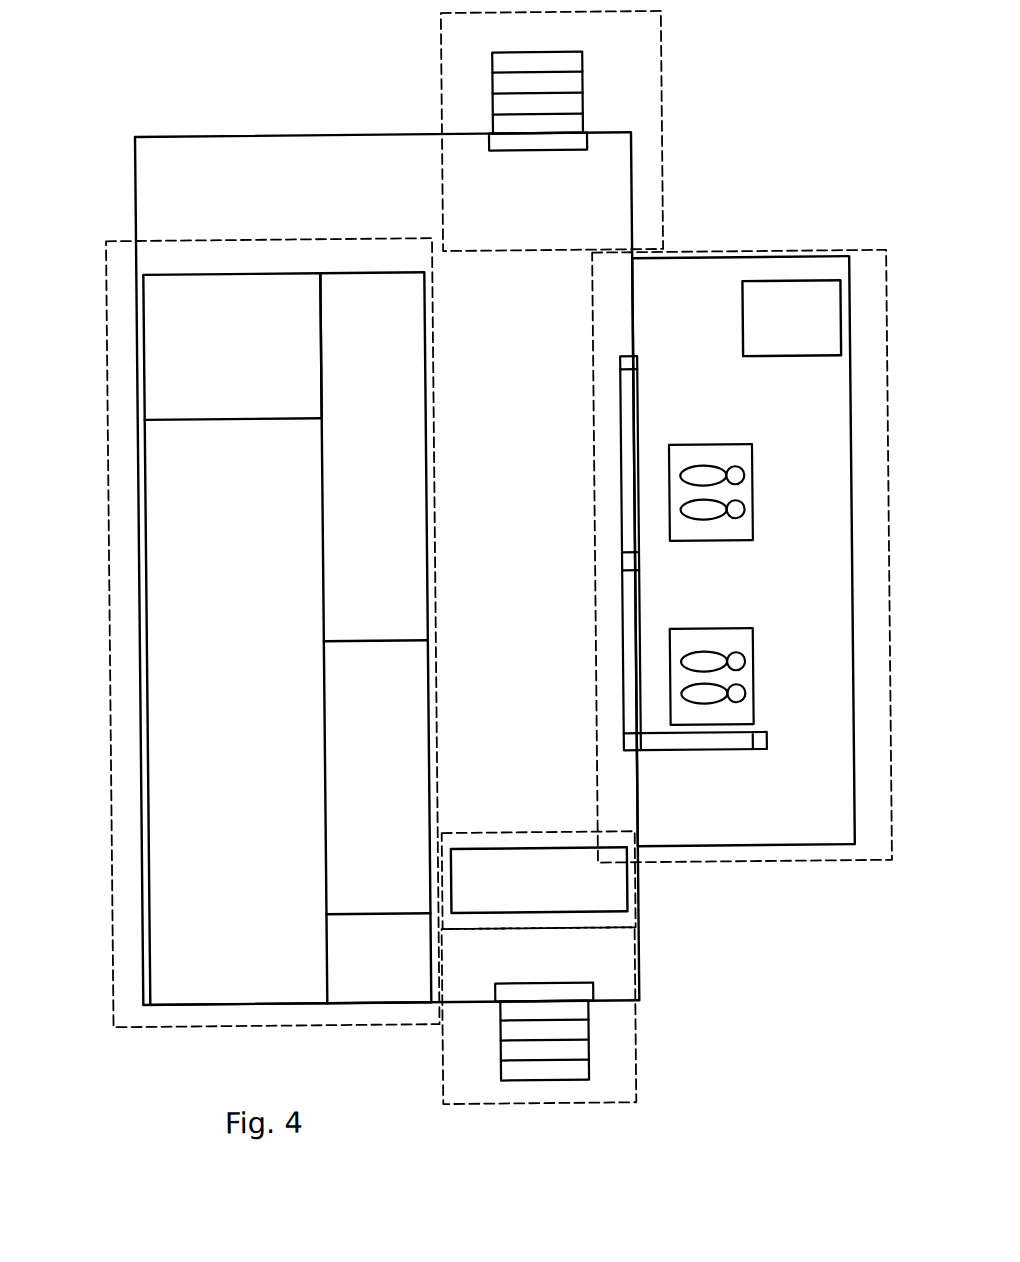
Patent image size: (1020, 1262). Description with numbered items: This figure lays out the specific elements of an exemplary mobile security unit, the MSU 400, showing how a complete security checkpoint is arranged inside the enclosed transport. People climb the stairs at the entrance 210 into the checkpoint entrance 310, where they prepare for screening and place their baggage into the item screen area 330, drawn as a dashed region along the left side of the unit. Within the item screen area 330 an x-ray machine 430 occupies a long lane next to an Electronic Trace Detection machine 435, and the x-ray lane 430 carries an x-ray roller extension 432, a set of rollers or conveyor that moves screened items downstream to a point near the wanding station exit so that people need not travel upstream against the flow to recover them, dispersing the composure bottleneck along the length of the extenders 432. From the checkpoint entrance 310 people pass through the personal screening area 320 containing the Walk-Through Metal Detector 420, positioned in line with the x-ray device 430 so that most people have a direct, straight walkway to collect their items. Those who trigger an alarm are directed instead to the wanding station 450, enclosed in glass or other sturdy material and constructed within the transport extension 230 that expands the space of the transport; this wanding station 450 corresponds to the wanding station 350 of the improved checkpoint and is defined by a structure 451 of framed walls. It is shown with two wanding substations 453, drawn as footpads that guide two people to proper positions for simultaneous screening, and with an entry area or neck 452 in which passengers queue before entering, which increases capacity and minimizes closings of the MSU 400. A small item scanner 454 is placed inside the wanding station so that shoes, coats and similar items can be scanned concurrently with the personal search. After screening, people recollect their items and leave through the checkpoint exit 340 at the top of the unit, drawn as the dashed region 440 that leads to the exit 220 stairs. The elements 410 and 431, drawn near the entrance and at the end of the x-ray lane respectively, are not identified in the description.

The mobile security unit (MSU) 400 is at (125, 79).
The entrance 210 is at (472, 1017).
The exit 220 is at (456, 129).
The transport extension 230 is at (736, 214).
The checkpoint entrance 310 is at (615, 1048).
The personal screening area 320 is at (612, 918).
The item screen area 330 is at (242, 258).
The checkpoint exit 340 is at (458, 214).
The wanding station 350 is at (873, 265).
The entry path 410 is at (602, 955).
The Walk-Through Metal Detector (WTMD) 420 is at (590, 887).
The x-ray machine 430 is at (410, 695).
The conveyor section 431 is at (380, 982).
The x-ray roller extension 432 is at (185, 718).
The explosive trace detector (ETD) 435 is at (170, 357).
The wanding station 440 is at (613, 230).
The wanding station 450 is at (828, 873).
The structure 451 is at (628, 462).
The entry area (neck) 452 is at (793, 823).
The wanding substations 453 is at (728, 553).
The small item scanner 454 is at (753, 302).